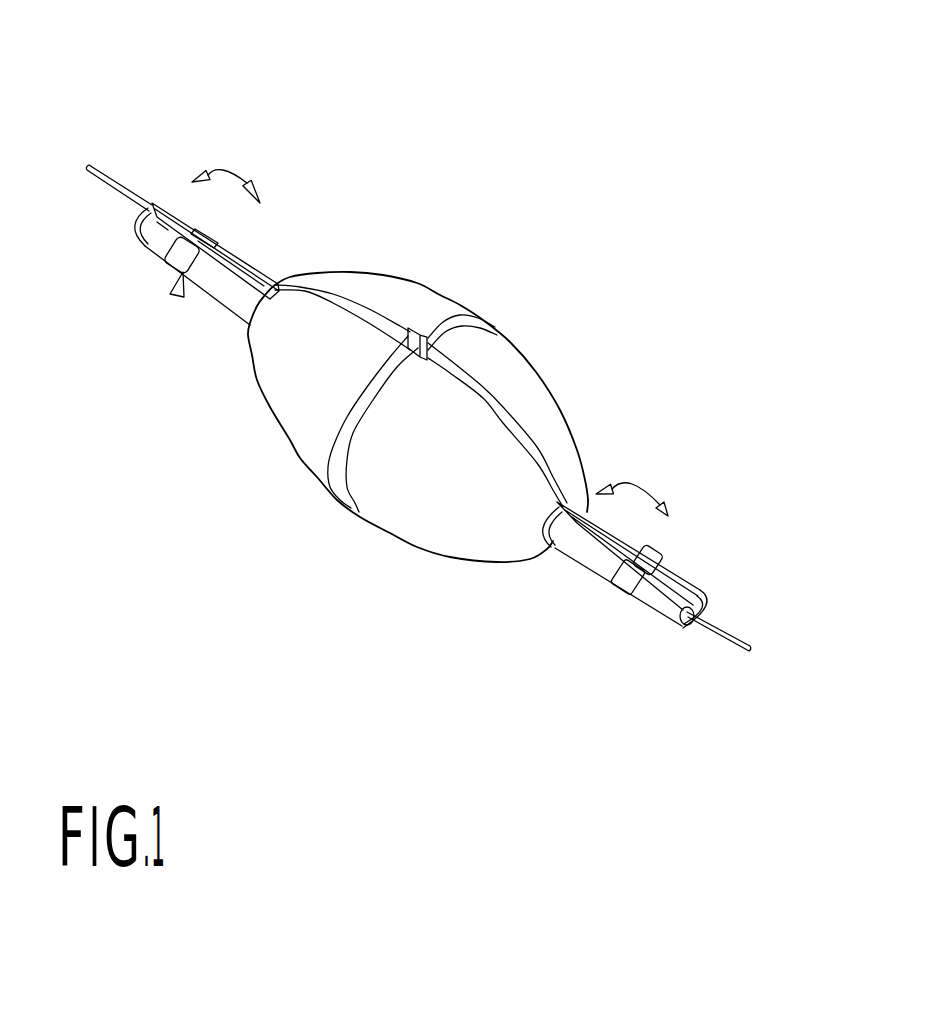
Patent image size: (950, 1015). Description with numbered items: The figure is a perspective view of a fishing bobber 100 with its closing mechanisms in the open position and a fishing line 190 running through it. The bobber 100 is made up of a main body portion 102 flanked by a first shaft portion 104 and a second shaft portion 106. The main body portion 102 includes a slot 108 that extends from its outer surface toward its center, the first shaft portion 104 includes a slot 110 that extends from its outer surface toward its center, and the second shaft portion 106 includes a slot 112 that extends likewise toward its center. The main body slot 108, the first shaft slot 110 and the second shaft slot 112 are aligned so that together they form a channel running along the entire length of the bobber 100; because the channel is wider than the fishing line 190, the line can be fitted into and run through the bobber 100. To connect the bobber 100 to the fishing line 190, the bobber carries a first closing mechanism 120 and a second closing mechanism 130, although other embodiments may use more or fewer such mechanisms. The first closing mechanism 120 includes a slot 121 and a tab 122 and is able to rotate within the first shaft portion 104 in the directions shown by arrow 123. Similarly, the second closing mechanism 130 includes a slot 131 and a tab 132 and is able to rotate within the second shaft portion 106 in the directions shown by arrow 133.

The bobber 100 is at (238, 593).
The main body portion 102 is at (420, 288).
The first shaft portion 104 is at (227, 293).
The second shaft portion 106 is at (573, 550).
The slot 108 is at (372, 300).
The slot 110 is at (248, 265).
The slot 112 is at (673, 598).
The first closing mechanism 120 is at (177, 296).
The slot 121 is at (125, 183).
The tab 122 is at (175, 252).
The arrow 123 is at (232, 172).
The second closing mechanism 130 is at (692, 555).
The slot 131 is at (685, 617).
The tab 132 is at (650, 553).
The arrow 133 is at (637, 486).
The fishing line 190 is at (732, 642).